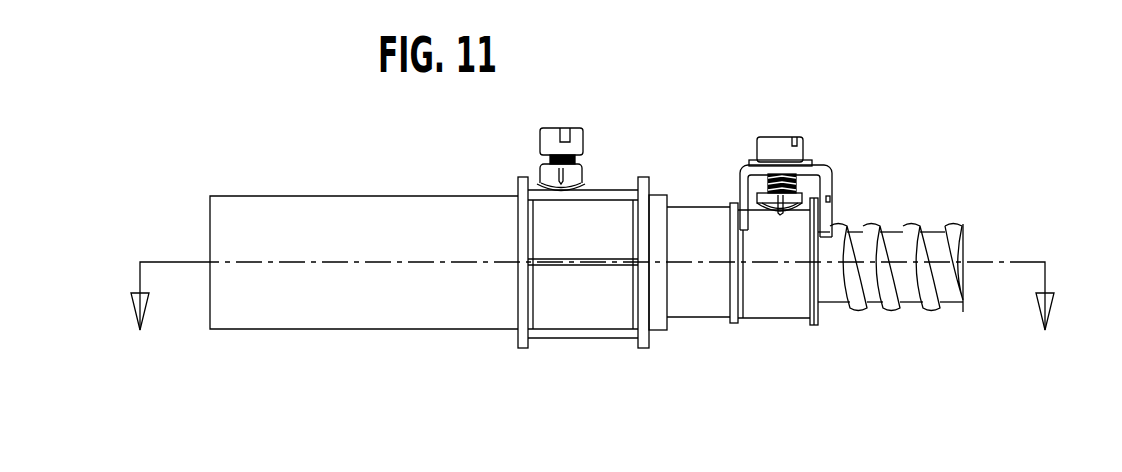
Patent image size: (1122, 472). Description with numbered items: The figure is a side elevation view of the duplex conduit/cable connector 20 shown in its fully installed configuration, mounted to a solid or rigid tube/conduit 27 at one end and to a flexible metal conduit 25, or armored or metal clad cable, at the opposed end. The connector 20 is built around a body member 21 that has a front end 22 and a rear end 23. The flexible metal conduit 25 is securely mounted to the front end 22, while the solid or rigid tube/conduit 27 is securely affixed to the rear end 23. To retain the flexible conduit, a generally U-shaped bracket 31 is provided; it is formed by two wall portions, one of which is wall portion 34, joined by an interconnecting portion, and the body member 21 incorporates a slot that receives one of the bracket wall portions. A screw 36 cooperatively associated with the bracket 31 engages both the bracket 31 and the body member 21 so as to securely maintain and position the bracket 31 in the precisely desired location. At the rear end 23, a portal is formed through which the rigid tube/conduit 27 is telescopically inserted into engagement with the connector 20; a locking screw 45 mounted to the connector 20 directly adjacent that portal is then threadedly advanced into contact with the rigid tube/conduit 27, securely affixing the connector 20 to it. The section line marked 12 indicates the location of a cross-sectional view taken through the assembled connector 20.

The section line 12- 12 is at (600, 326).
The duplex conduit/cable connector 20 is at (807, 248).
The body member 21 is at (712, 325).
The front end 22 is at (886, 291).
The rear end 23 is at (525, 289).
The flexible metal conduit 25 is at (944, 244).
The solid or rigid tube/conduit 27 is at (350, 223).
The bracket 31 is at (832, 177).
The wall portion 34 is at (841, 197).
The screw 36 is at (738, 168).
The locking screw 45 is at (506, 148).